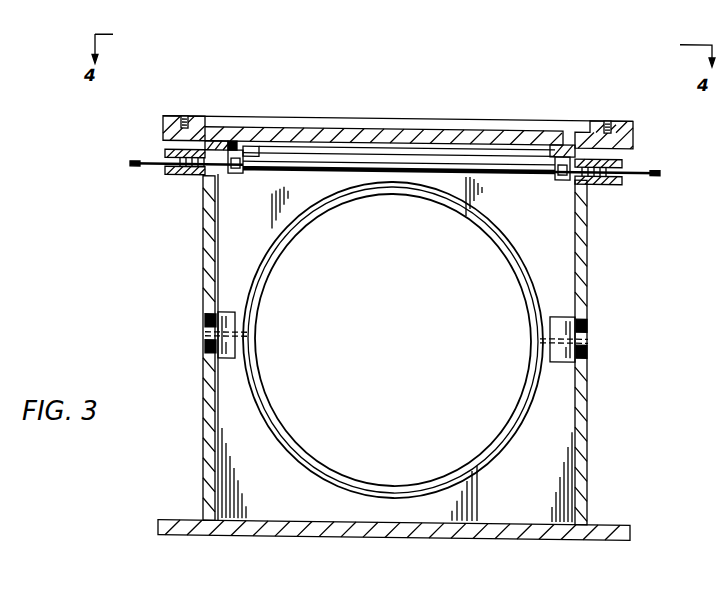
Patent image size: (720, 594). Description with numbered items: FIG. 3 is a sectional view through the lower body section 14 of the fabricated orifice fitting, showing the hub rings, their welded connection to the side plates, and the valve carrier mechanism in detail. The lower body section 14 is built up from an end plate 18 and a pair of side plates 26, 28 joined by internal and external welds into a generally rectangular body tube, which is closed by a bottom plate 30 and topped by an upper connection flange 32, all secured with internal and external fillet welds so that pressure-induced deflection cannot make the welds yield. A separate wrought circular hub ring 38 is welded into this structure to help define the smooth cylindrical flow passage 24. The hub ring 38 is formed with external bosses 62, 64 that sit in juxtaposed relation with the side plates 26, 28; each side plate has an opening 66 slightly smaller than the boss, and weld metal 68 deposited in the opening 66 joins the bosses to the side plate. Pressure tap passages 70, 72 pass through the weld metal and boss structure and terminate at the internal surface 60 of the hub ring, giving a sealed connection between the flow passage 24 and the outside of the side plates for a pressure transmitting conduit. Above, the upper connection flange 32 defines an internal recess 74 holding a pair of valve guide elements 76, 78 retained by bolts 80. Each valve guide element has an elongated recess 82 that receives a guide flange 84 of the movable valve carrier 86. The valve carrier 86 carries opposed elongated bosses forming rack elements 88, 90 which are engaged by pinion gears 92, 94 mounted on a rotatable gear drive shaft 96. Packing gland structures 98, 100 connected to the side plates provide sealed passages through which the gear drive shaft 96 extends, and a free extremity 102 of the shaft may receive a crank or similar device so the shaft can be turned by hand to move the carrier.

The lower body section 14 is at (120, 303).
The end plate 18 is at (565, 482).
The flow passage 24 is at (383, 343).
The side plate 26 is at (204, 453).
The side plate 28 is at (588, 246).
The bottom plate 30 is at (470, 540).
The upper connection flange 32 is at (163, 133).
The hub ring 38 is at (478, 470).
The internal surface 60 is at (528, 414).
The external boss 62 is at (230, 355).
The external boss 64 is at (565, 360).
The opening 66 is at (589, 350).
The weld metal 68 is at (589, 323).
The pressure tap passage 70 is at (205, 337).
The pressure tap passage 72 is at (589, 340).
The internal recess 74 is at (460, 131).
The valve guide element 76 is at (224, 132).
The valve guide element 78 is at (578, 130).
The bolts 80 is at (208, 130).
The elongated recess 82 is at (238, 136).
The guide flange 84 is at (262, 141).
The valve carrier 86 is at (362, 131).
The rack element 88 is at (259, 160).
The rack element 90 is at (556, 143).
The pinion gear 92 is at (236, 177).
The pinion gear 94 is at (558, 178).
The gear drive shaft 96 is at (500, 174).
The packing gland structure 98 is at (198, 179).
The packing gland structure 100 is at (598, 184).
The free extremity 102 is at (140, 167).